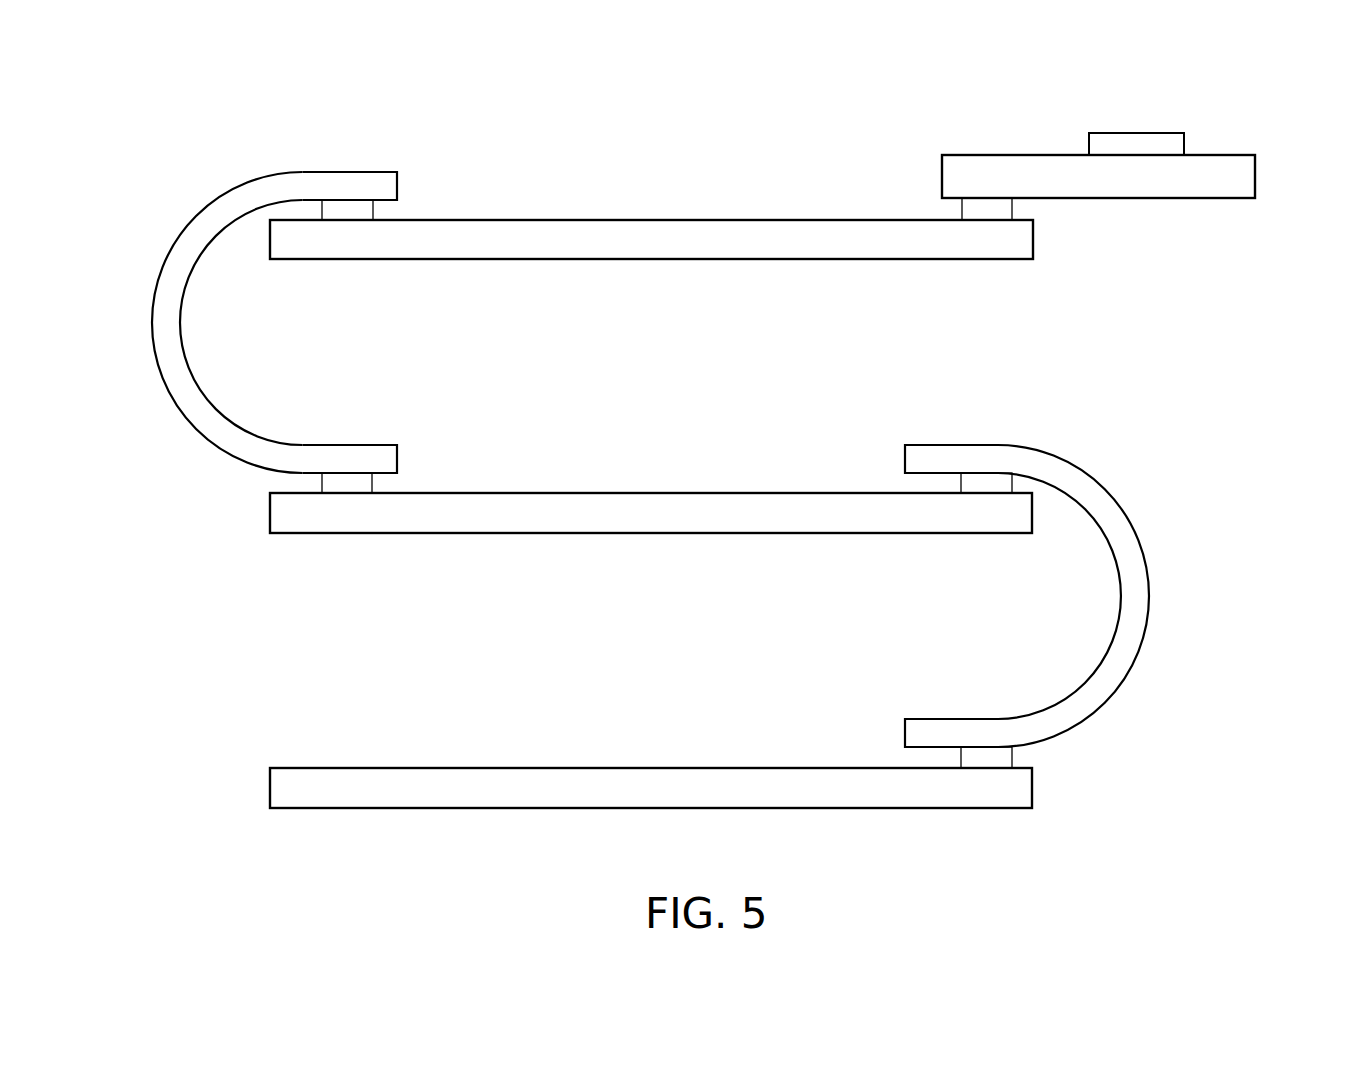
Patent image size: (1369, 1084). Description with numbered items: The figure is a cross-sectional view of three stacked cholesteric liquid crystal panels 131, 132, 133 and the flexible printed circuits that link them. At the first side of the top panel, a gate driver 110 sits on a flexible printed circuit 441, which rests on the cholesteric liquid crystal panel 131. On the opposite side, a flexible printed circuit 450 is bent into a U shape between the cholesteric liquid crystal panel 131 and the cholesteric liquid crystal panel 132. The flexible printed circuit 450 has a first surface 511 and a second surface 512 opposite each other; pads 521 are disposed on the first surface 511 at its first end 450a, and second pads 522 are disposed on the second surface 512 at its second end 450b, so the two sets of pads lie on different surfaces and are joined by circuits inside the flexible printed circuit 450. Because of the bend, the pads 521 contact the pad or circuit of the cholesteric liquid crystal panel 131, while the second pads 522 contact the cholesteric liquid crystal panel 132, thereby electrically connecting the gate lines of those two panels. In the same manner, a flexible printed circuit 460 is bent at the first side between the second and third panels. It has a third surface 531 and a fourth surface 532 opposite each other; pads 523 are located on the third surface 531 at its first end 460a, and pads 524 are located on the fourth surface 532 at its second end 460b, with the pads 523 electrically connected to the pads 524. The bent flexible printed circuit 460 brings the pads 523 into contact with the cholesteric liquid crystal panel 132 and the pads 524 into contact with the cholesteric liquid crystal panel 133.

The gate driver 110 is at (1135, 138).
The flexible printed circuit 441 is at (1243, 177).
The cholesteric liquid crystal panel 131 is at (1018, 240).
The cholesteric liquid crystal panel 132 is at (275, 516).
The cholesteric liquid crystal panel 133 is at (1018, 788).
The flexible printed circuit 450 is at (286, 322).
The first end 450a is at (385, 183).
The second end 450b is at (387, 460).
The first surface 511 is at (192, 377).
The second surface 512 is at (160, 265).
The pads 521 is at (346, 206).
The second pads 522 is at (345, 485).
The pads 523 is at (985, 482).
The pads 524 is at (987, 762).
The flexible printed circuit 460 is at (1025, 597).
The first end 460a is at (912, 460).
The second end 460b is at (912, 736).
The third surface 531 is at (1118, 570).
The fourth surface 532 is at (1146, 557).